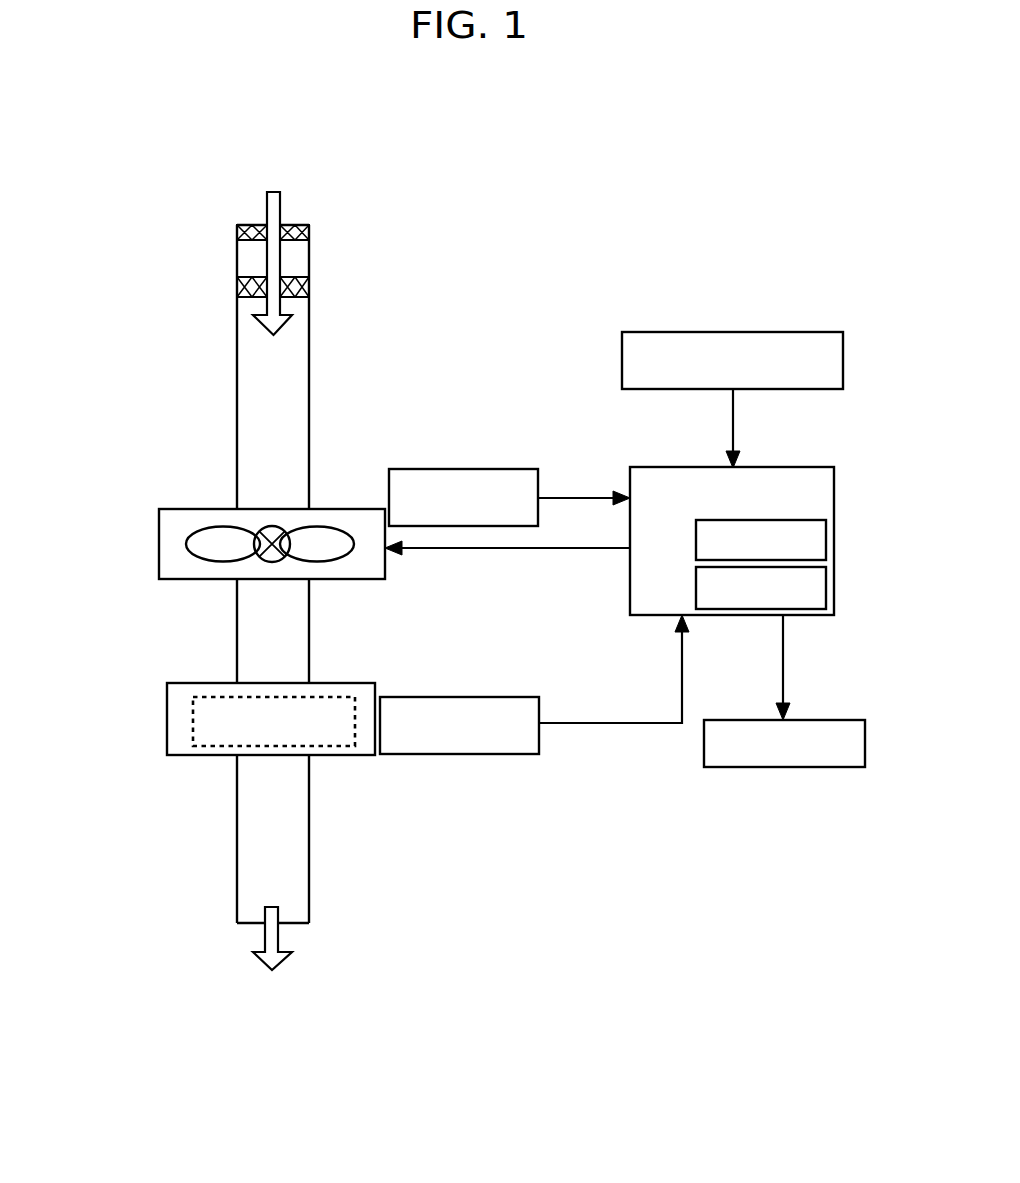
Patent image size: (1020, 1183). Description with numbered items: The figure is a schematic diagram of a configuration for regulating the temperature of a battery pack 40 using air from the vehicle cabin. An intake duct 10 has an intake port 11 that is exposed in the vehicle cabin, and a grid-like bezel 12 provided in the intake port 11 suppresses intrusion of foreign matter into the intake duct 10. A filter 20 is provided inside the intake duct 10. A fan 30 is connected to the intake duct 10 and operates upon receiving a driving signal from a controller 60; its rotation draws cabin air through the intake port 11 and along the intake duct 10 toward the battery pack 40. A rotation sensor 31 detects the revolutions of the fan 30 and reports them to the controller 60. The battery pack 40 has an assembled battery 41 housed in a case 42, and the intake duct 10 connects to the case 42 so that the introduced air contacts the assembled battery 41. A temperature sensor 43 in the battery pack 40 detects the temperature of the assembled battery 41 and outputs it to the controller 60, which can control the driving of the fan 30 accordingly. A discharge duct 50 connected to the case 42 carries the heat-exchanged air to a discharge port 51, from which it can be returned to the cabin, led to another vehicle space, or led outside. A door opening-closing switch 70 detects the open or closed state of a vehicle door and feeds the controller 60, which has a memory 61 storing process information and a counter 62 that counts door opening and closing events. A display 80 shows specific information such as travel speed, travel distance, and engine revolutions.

The intake duct 10 is at (236, 376).
The intake port 11 is at (294, 225).
The bezel 12 is at (237, 232).
The filter 20 is at (237, 292).
The fan 30 is at (159, 540).
The rotation sensor 31 is at (465, 469).
The battery pack 40 is at (221, 717).
The assembled battery 41 is at (193, 732).
The case 42 is at (167, 700).
The temperature sensor 43 is at (457, 754).
The discharge duct 50 is at (235, 843).
The discharge port 51 is at (247, 926).
The controller 60 is at (633, 541).
The memory 61 is at (826, 542).
The counter 62 is at (826, 592).
The door opening-closing switch 70 is at (727, 332).
The display 80 is at (783, 767).